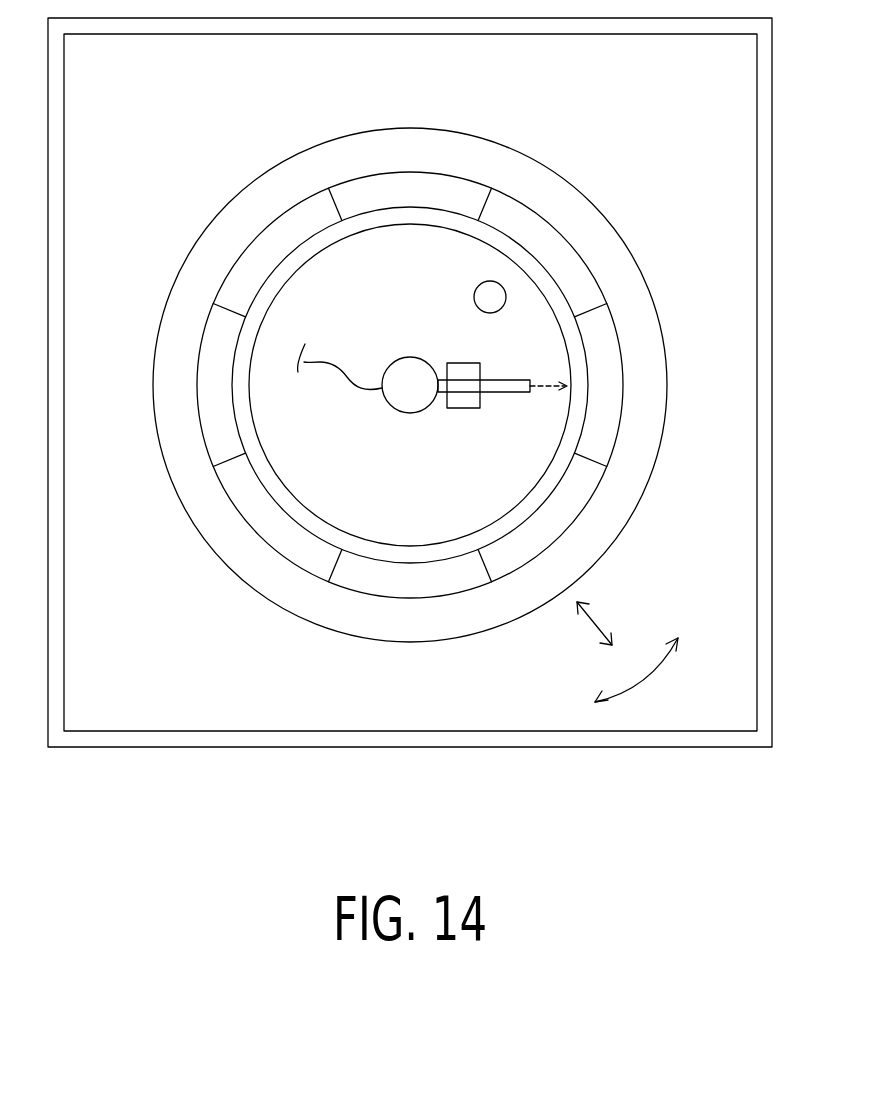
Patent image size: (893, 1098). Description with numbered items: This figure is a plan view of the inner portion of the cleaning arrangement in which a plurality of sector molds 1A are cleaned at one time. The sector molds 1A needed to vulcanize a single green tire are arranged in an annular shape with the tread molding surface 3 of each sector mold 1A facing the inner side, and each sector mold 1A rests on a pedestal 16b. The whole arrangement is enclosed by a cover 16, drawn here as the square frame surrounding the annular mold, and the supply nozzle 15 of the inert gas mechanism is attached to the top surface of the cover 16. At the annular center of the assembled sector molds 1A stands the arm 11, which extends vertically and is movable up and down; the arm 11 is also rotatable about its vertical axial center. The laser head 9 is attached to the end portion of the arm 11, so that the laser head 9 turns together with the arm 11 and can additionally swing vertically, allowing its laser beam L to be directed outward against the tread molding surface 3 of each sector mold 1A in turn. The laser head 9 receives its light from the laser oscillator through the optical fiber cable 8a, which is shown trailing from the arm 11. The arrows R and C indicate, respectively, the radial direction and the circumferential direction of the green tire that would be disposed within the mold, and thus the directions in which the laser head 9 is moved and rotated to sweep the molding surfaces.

The cover 16 is at (380, 735).
The pedestal 16b is at (218, 238).
The sector mold 1A is at (553, 248).
The tread molding surface 3 is at (293, 270).
The supply nozzle 15 is at (482, 293).
The arm 11 is at (403, 397).
The laser head 9 is at (503, 380).
The laser beam L is at (540, 387).
The optical fiber cable 8a is at (343, 382).
The radial direction arrow R is at (597, 618).
The circumferential direction arrow C is at (636, 670).